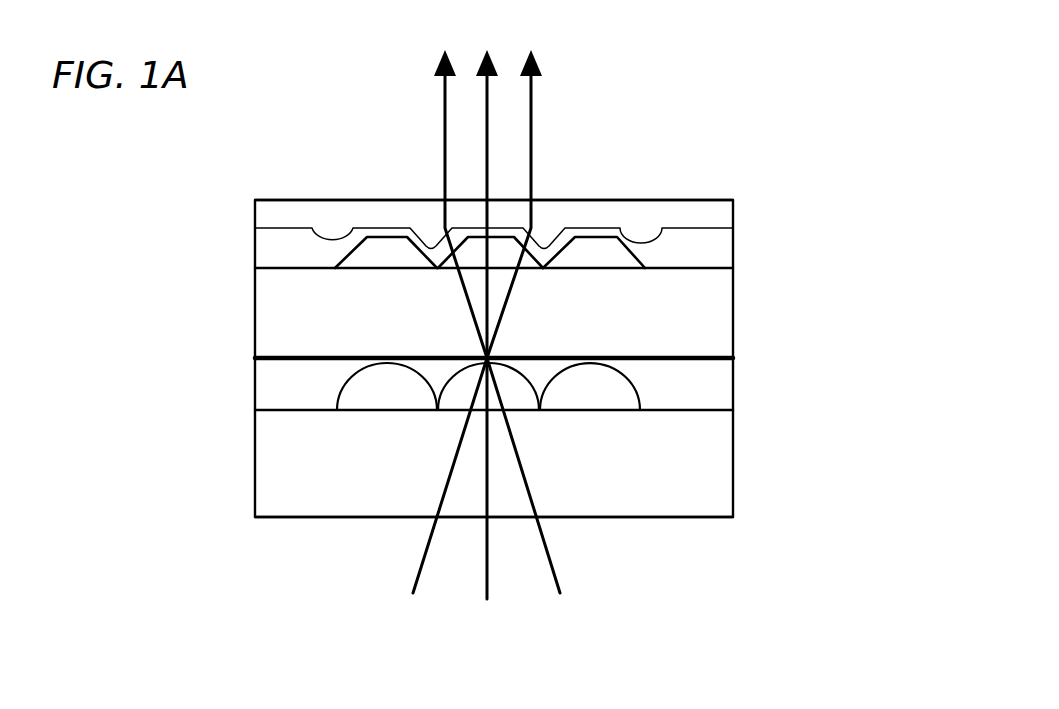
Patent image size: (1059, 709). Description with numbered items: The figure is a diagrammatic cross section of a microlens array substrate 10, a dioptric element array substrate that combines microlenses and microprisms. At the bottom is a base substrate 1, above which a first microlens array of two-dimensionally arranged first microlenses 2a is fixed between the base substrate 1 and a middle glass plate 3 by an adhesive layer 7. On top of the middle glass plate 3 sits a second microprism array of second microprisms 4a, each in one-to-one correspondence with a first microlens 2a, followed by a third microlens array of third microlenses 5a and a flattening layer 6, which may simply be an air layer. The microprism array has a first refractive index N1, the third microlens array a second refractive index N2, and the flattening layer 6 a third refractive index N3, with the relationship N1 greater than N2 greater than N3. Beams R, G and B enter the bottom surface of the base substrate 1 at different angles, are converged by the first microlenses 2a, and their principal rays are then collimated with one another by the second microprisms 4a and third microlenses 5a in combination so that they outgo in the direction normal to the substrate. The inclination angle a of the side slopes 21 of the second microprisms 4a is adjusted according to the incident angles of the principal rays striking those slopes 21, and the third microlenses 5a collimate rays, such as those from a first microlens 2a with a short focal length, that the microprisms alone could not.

The microlens array substrate 10 is at (630, 98).
The flattening layer 6 is at (680, 210).
The third microlens 5a is at (682, 237).
The second microprism 4a is at (615, 267).
The middle glass plate 3 is at (690, 313).
The adhesive layer 7 is at (710, 382).
The first microlens 2a is at (605, 398).
The base substrate 1 is at (675, 463).
The slope 21 is at (437, 241).
The inclination angle a is at (536, 242).
The first refractive index N1 is at (382, 257).
The second refractive index N2 is at (284, 257).
The third refractive index N3 is at (298, 213).
The B beam B is at (472, 346).
The R beam R is at (487, 346).
The G beam G is at (509, 346).